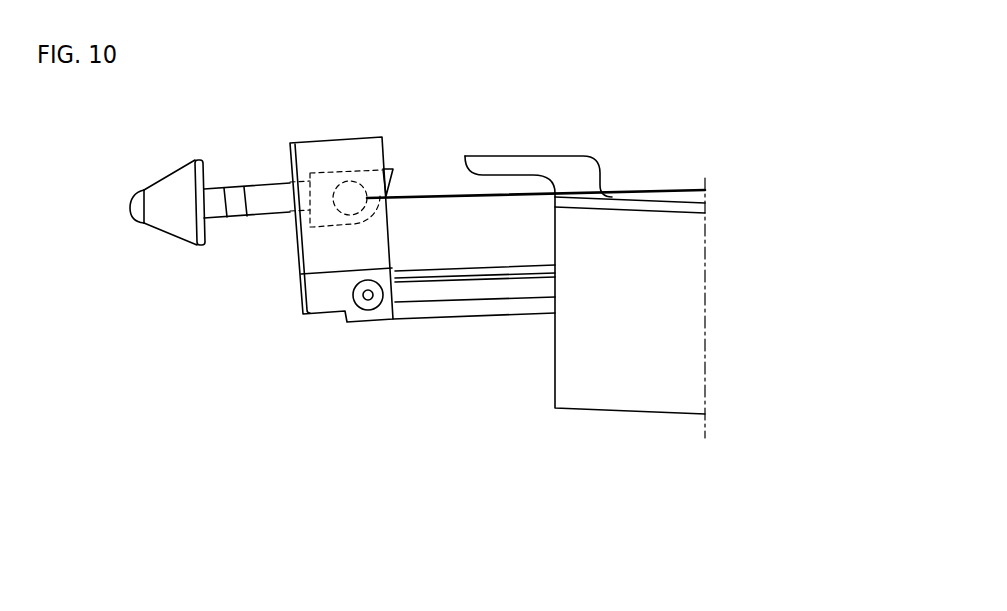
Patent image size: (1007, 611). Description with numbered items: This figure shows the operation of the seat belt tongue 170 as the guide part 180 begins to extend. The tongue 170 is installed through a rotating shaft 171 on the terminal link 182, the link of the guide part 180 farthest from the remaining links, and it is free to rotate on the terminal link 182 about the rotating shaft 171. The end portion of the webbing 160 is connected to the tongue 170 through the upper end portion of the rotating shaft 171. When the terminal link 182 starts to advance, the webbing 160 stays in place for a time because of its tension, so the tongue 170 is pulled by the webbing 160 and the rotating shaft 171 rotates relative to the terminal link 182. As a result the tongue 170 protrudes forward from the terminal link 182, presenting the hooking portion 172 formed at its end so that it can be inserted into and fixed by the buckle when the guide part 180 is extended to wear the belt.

The webbing 160 is at (432, 196).
The tongue 170 is at (235, 195).
The rotating shaft 171 is at (350, 181).
The hooking portion 172 is at (160, 185).
The guide part 180 is at (625, 408).
The terminal link 182 is at (442, 314).